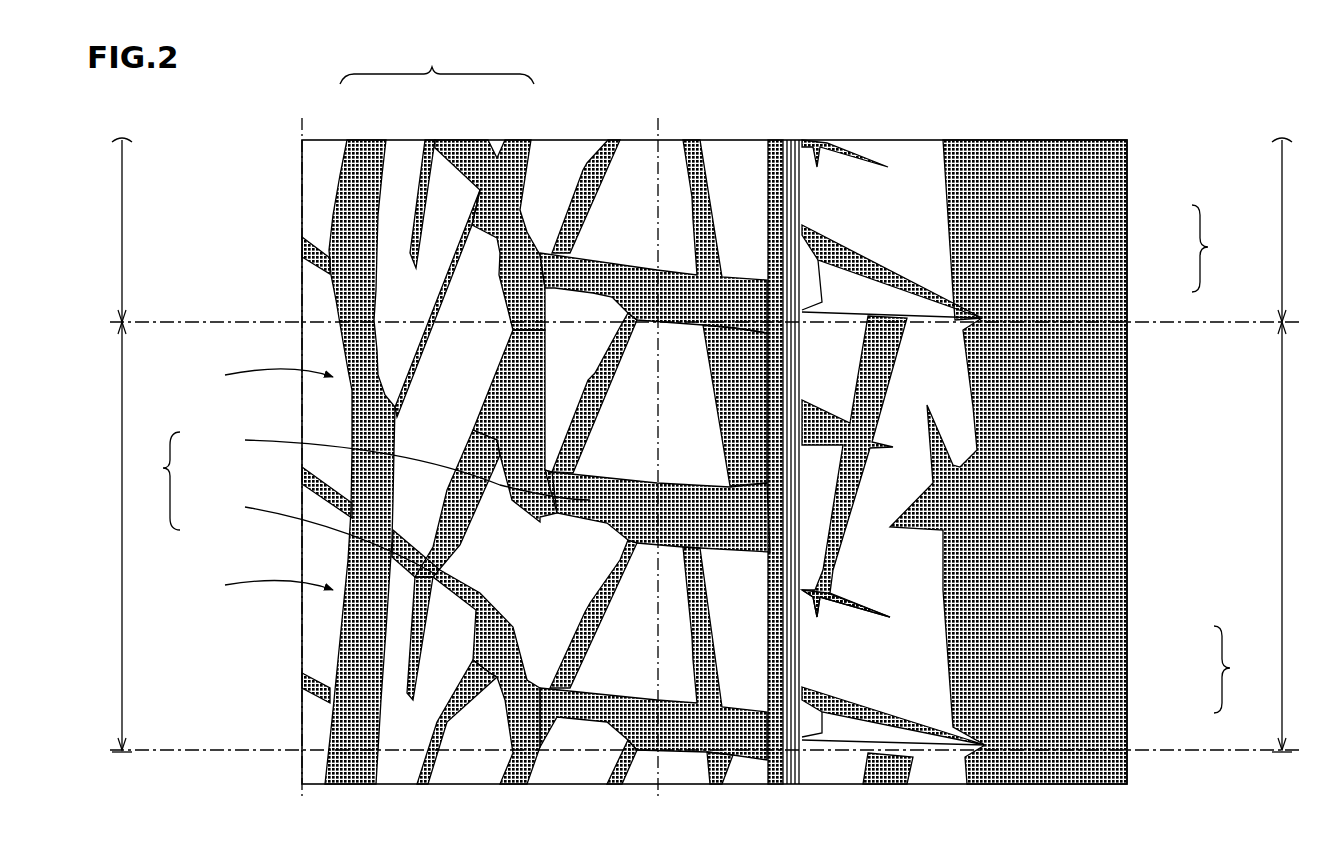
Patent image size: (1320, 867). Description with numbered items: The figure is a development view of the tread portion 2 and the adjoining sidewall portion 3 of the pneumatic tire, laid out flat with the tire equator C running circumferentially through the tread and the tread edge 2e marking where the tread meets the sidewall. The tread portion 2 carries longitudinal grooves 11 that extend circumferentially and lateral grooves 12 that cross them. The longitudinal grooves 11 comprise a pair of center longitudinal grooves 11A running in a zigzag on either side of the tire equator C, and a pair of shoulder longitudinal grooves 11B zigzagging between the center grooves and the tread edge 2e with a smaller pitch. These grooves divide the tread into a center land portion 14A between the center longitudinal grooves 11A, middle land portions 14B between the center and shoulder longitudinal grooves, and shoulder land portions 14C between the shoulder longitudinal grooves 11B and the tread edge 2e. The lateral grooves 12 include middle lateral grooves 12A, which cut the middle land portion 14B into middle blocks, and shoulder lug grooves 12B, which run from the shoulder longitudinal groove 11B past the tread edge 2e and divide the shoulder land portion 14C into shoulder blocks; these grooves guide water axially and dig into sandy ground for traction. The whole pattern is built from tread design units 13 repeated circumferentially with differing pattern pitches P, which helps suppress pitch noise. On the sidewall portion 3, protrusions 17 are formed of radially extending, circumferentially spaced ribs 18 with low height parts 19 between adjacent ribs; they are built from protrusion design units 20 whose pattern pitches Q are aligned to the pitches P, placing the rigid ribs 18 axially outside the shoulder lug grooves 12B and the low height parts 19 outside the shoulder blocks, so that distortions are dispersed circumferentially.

The tread portion 2 is at (572, 172).
The tread edge 2e is at (656, 445).
The sidewall portion 3 is at (1005, 175).
The tire equator C is at (302, 140).
The longitudinal grooves 11 is at (437, 65).
The center longitudinal groove 11A is at (373, 183).
The shoulder longitudinal groove 11B is at (503, 173).
The lateral grooves 12 is at (244, 470).
The middle lateral groove 12A is at (312, 536).
The shoulder lug groove 12B is at (389, 466).
The tread design unit 13 is at (261, 480).
The center land portion 14A is at (318, 722).
The middle land portion 14B is at (408, 713).
The shoulder land portion 14C is at (602, 668).
The protrusion 17 is at (1030, 442).
The longitudinal rib 18 is at (893, 302).
The low height part 19 is at (918, 228).
The protrusion design unit 20 is at (903, 568).
The pattern pitch P is at (122, 445).
The pattern pitch Q is at (1282, 445).